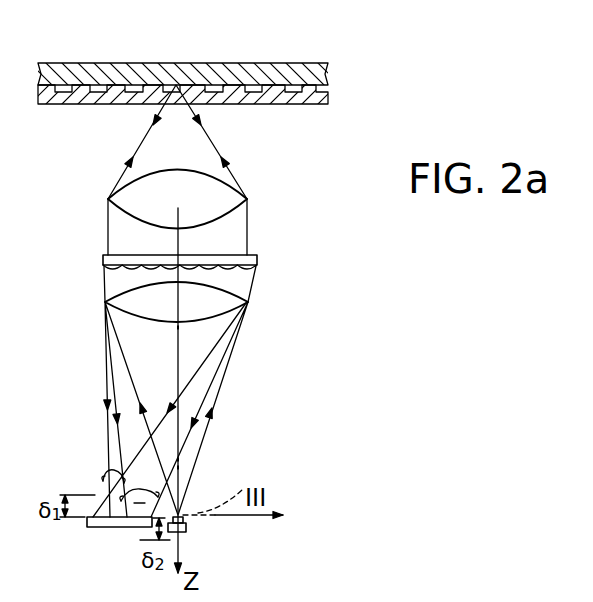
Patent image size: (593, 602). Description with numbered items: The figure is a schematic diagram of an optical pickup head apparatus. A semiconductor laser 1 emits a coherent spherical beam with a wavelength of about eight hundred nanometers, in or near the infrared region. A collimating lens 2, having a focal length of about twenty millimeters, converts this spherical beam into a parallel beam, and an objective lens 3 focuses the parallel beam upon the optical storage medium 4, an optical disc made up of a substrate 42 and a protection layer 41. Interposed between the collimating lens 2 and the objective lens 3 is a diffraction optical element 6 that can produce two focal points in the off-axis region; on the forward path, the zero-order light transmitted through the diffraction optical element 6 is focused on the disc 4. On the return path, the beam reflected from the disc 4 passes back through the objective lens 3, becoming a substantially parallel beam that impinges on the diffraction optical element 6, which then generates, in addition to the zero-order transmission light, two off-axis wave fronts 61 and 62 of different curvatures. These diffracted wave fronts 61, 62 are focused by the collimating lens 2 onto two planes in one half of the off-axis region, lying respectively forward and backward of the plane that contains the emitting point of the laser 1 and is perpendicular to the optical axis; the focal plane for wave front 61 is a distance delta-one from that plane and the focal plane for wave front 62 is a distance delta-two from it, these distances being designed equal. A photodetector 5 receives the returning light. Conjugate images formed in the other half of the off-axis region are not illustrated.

The semiconductor laser 1 is at (187, 527).
The collimating lens 2 is at (223, 300).
The objective lens 3 is at (225, 193).
The optical storage medium 4 is at (216, 67).
The protection layer 41 is at (330, 93).
The substrate 42 is at (330, 70).
The photodetector 5 is at (93, 528).
The diffraction optical element 6 is at (258, 262).
The first off-axis wave front 61 is at (105, 472).
The second off-axis wave front 62 is at (160, 491).